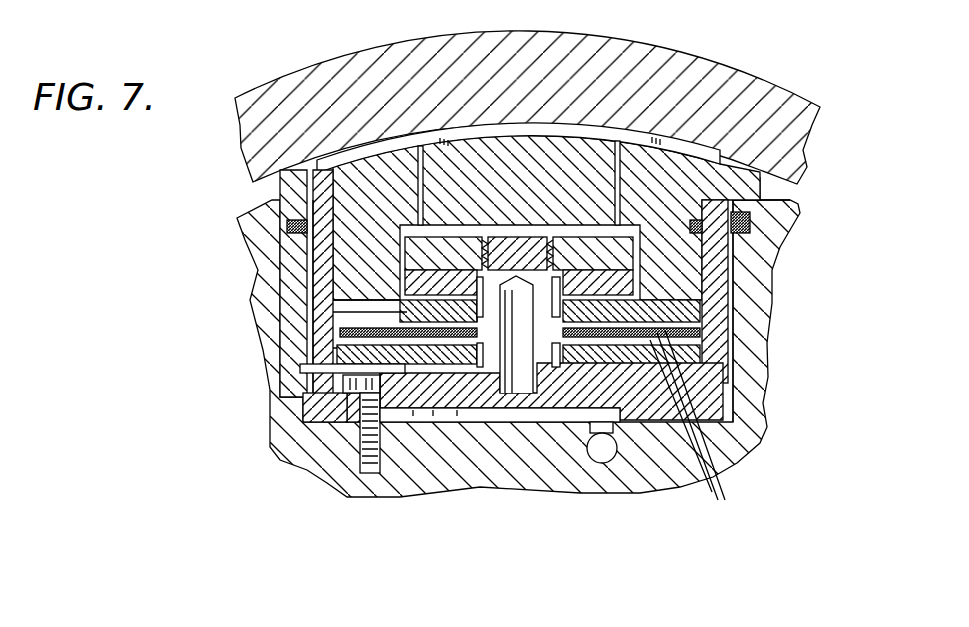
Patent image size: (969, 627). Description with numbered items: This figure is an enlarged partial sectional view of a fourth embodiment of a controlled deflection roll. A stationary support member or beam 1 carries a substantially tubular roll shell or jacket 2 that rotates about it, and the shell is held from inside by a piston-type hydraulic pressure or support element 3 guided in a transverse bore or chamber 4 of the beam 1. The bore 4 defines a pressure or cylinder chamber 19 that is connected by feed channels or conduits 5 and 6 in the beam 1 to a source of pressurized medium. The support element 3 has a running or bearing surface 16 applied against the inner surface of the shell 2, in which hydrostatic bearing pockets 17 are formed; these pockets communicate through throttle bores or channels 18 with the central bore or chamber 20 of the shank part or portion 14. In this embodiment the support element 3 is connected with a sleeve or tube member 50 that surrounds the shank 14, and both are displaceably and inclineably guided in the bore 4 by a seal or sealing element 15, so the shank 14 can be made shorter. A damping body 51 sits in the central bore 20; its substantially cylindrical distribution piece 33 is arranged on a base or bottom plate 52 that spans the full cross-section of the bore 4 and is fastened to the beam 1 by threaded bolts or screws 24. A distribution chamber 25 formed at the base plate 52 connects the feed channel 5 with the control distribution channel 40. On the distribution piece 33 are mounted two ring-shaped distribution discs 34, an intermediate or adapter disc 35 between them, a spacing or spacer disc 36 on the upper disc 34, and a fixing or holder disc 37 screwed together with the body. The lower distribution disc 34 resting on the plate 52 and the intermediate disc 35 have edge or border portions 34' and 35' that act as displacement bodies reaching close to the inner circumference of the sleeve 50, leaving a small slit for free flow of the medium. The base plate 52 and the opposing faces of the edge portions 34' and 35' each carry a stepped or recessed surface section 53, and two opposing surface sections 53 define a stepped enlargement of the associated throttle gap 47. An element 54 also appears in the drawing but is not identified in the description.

The stationary support member or beam 1 is at (288, 433).
The tubular roll shell or jacket 2 is at (788, 98).
The hydraulic pressure or support element 3 is at (775, 187).
The bore or chamber 4 is at (745, 394).
The feed channel or conduit 5 is at (615, 428).
The feed channel or conduit 6 is at (603, 455).
The shank part or portion 14 is at (688, 272).
The seal or sealing element 15 is at (752, 224).
The running or bearing surface 16 is at (306, 156).
The hydrostatic bearing pocket 17 is at (410, 134).
The throttle bore or channel 18 is at (436, 223).
The pressure or cylinder chamber 19 is at (695, 335).
The central bore or chamber 20 is at (727, 262).
The threaded bolt or screw 24 is at (362, 445).
The distribution or distributor chamber 25 is at (483, 415).
The cylindrical distribution or distributor piece 33 is at (522, 240).
The ring-shaped distribution or distributor disc 34 is at (451, 400).
The edge or border or marginal portion 34' is at (305, 335).
The intermediate or adapter disc 35 is at (399, 452).
The edge or border or marginal portion 35' is at (451, 320).
The spacing or spacer disc 36 is at (407, 283).
The fixing or holder disc 37 is at (410, 257).
The control distribution channel 40 is at (526, 380).
The throttle gap 47 is at (828, 303).
The sleeve or tube member 50 is at (718, 250).
The damping body 51 is at (302, 403).
The base or bottom plate 52 is at (318, 403).
The surface section or surface 53 is at (710, 352).
The rod 54 is at (355, 342).